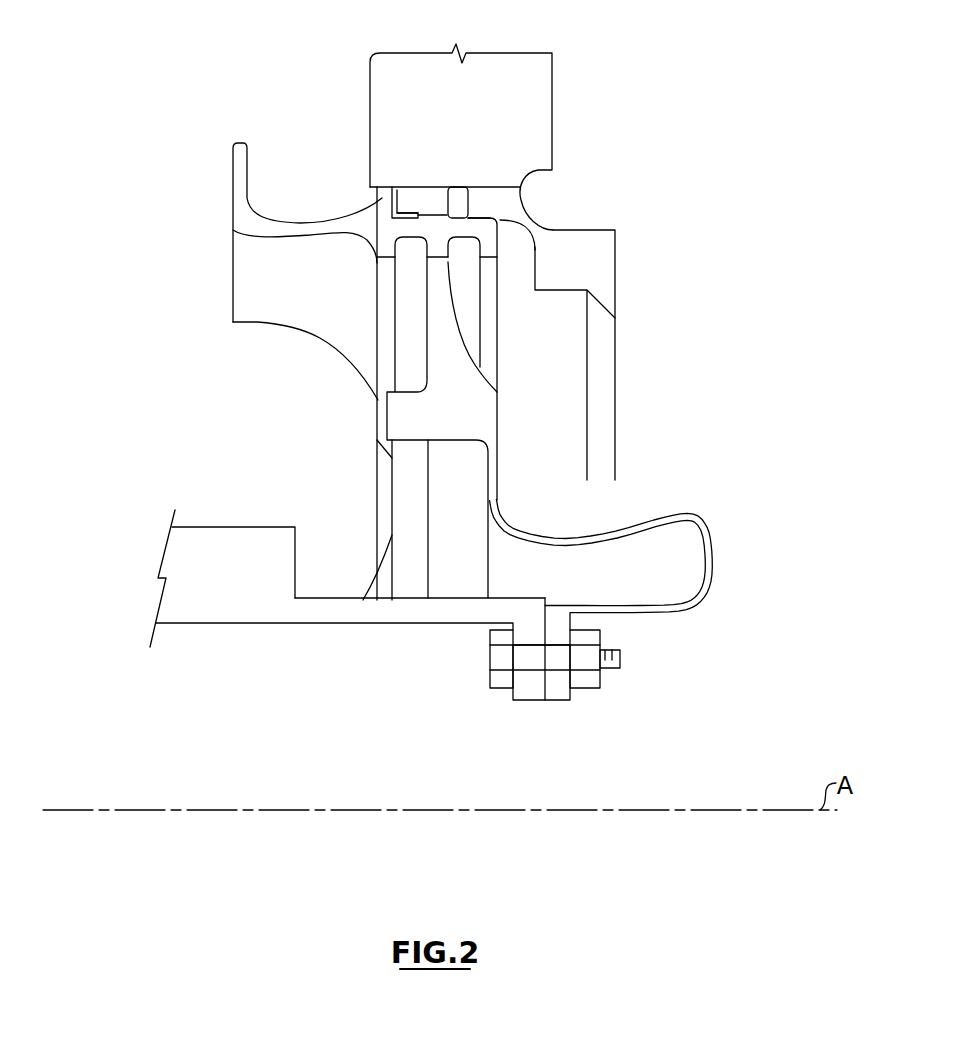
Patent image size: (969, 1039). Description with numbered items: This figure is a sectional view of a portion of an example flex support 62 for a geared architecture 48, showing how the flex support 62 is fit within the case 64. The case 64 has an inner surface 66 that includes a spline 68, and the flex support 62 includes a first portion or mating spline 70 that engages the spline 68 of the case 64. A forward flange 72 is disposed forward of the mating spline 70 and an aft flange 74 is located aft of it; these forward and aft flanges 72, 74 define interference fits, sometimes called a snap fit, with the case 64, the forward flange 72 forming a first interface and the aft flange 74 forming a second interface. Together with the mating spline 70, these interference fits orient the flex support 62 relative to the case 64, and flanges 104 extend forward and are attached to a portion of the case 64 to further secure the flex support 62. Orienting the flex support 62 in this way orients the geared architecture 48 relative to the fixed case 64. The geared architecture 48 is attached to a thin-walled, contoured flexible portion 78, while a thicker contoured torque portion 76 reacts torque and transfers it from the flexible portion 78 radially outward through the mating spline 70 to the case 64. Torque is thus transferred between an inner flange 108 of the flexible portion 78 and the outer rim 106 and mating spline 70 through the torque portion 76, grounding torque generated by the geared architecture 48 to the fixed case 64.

The geared architecture 48 is at (222, 577).
The flex support 62 is at (542, 392).
The case 64 is at (513, 122).
The inner surface 66 is at (512, 222).
The spline 68 is at (415, 202).
The mating spline 70 is at (427, 217).
The forward flange 72 is at (388, 190).
The aft flange 74 is at (488, 213).
The torque portion 76 is at (445, 357).
The flexible portion 78 is at (700, 521).
The flanges 104 is at (243, 218).
The outer rim 106 is at (446, 234).
The inner flange 108 is at (562, 688).